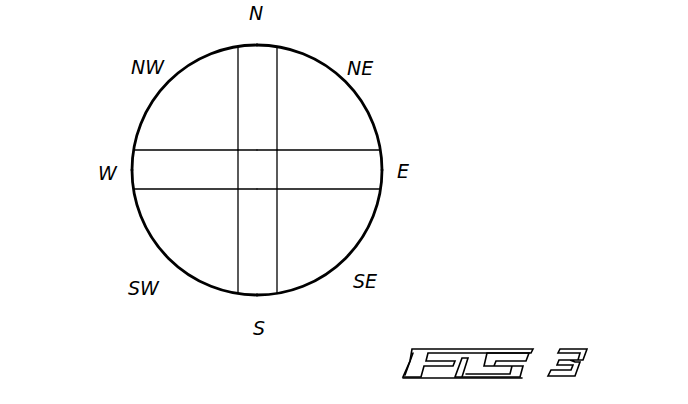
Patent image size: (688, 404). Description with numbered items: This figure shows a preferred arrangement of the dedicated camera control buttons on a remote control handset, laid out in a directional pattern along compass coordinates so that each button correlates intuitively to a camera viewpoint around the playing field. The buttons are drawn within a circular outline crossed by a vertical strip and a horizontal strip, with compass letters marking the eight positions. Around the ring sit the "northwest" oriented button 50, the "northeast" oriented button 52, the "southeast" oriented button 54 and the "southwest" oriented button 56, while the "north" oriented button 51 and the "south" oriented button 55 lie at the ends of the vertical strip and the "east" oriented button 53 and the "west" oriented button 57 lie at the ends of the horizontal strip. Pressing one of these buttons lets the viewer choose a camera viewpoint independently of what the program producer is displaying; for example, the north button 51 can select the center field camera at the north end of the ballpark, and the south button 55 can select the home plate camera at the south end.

The northwest oriented button 50 is at (152, 127).
The north oriented button 51 is at (263, 53).
The northeast oriented button 52 is at (353, 118).
The east oriented button 53 is at (362, 163).
The southeast oriented button 54 is at (355, 210).
The south oriented button 55 is at (260, 280).
The southwest oriented button 56 is at (217, 272).
The west oriented button 57 is at (150, 173).